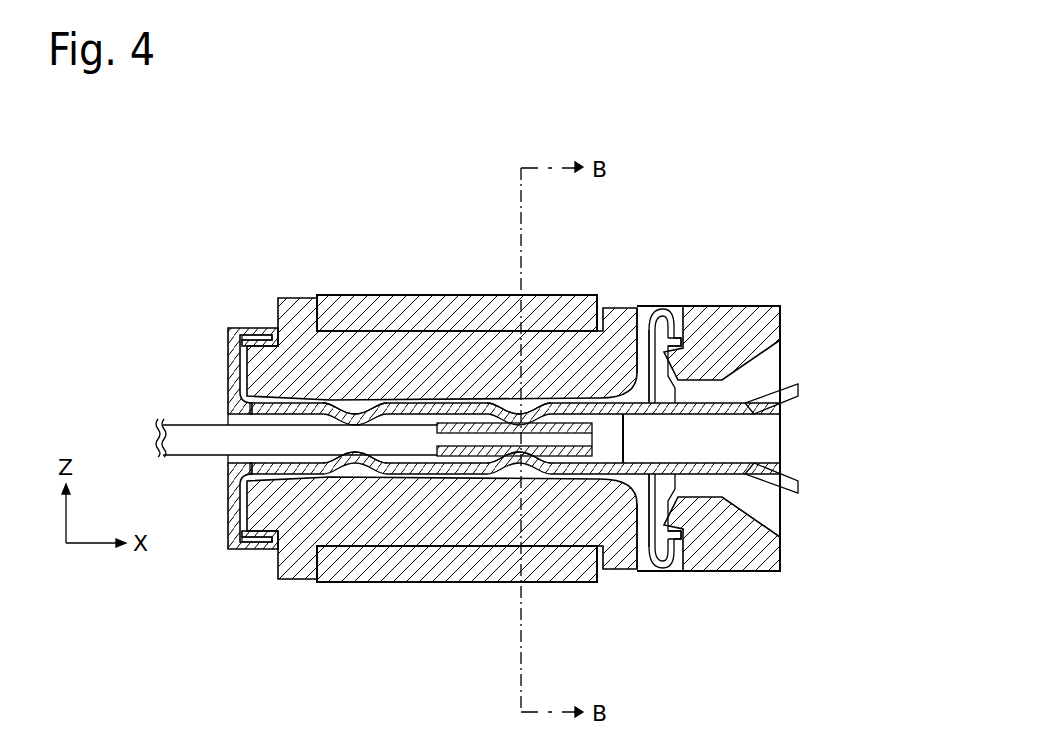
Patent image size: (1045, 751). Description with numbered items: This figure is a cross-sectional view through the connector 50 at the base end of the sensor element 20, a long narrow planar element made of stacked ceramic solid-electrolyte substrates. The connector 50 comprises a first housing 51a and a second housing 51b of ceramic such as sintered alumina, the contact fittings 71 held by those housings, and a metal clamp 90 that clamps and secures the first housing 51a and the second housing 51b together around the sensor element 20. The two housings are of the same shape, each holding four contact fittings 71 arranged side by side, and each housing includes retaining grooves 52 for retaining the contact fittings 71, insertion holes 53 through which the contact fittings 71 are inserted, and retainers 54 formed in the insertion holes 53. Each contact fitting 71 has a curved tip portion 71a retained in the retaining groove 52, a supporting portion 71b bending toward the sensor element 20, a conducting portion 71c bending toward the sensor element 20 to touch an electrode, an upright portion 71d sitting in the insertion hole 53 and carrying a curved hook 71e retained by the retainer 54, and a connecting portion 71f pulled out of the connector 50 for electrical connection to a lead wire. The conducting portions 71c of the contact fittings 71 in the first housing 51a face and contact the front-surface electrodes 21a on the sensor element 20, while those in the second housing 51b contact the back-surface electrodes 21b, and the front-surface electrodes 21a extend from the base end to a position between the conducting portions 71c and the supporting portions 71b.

The sensor element 20 is at (185, 440).
The front-surface electrode 21a is at (562, 424).
The back-surface electrode 21b is at (562, 456).
The connector 50 is at (812, 187).
The first housing 51a is at (313, 360).
The second housing 51b is at (298, 545).
The retaining groove 52 is at (265, 328).
The insertion hole 53 is at (648, 306).
The retainer 54 is at (700, 343).
The contact fitting 71 is at (826, 385).
The tip portion 71a is at (233, 328).
The supporting portion 71b is at (363, 412).
The conducting portion 71c is at (510, 418).
The upright portion 71d is at (652, 306).
The hook 71e is at (676, 335).
The connecting portion 71f is at (765, 398).
The metal clamp 90 is at (420, 300).